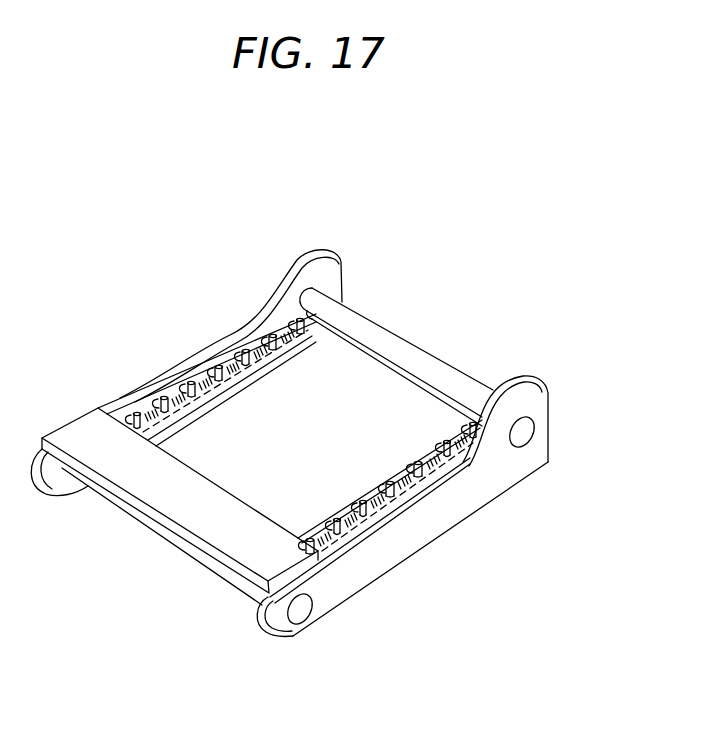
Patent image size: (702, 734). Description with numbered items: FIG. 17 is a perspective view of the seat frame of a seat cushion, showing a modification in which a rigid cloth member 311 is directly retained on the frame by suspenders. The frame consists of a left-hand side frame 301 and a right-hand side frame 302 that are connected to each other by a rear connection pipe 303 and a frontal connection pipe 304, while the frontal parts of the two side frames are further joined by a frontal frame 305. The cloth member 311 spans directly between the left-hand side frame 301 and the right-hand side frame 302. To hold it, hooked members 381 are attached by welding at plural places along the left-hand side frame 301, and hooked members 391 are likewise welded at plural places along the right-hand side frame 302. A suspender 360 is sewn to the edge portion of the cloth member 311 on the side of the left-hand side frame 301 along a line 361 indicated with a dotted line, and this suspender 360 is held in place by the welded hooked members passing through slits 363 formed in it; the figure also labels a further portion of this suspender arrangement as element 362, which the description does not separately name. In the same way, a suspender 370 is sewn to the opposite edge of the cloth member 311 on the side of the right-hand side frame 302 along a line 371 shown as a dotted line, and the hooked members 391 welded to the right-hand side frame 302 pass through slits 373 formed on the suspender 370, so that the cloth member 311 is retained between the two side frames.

The left-hand side frame 301 is at (315, 246).
The right-hand side frame 302 is at (538, 378).
The rear connection pipe 303 is at (362, 327).
The frontal connection pipe 304 is at (300, 614).
The frontal frame 305 is at (212, 527).
The cloth member 311 is at (372, 405).
The suspender 360 is at (194, 342).
The line 361 is at (258, 367).
The terminal pin 362 is at (146, 408).
The slits 363 is at (182, 388).
The suspender 370 is at (424, 533).
The line 371 is at (358, 529).
The slits 373 is at (459, 467).
The hooked members 381 is at (221, 367).
The hooked members 391 is at (376, 518).